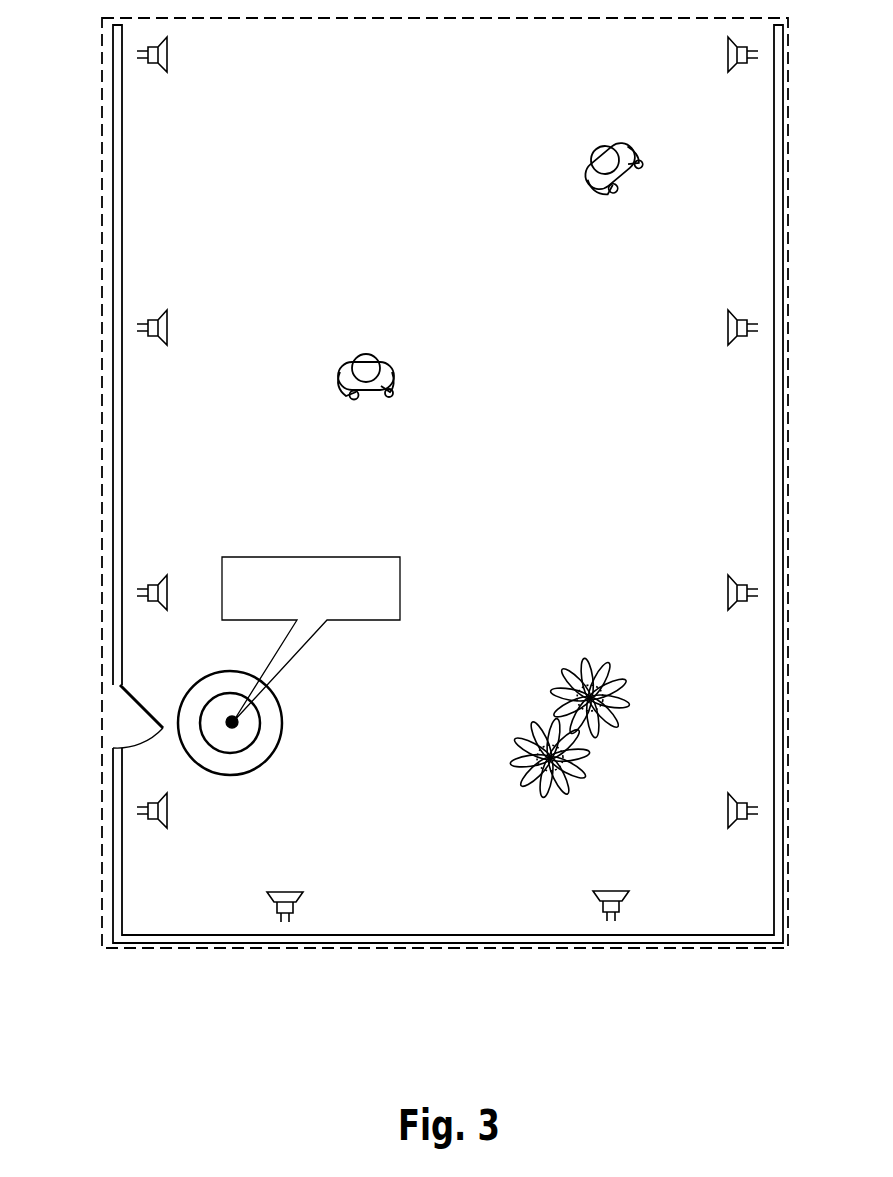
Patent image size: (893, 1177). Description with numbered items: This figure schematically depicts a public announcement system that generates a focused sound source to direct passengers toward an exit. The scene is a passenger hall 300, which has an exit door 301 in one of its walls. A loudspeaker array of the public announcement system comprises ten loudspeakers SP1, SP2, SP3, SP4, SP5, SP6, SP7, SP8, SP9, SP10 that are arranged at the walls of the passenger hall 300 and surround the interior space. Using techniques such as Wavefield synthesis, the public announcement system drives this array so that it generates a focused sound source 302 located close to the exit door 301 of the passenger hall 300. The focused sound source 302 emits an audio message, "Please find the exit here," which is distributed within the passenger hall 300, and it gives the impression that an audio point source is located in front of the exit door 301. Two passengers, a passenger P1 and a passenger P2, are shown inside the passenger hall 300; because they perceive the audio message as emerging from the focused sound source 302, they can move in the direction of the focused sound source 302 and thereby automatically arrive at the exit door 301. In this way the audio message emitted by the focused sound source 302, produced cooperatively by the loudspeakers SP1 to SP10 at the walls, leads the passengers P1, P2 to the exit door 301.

The passenger hall 300 is at (340, 948).
The exit door 301 is at (132, 717).
The focused sound source 302 is at (238, 727).
The loudspeaker SP1 is at (154, 68).
The loudspeaker SP2 is at (154, 341).
The loudspeaker SP3 is at (154, 606).
The loudspeaker SP4 is at (154, 824).
The loudspeaker SP5 is at (304, 907).
The loudspeaker SP6 is at (630, 906).
The loudspeaker SP7 is at (742, 824).
The loudspeaker SP8 is at (740, 606).
The loudspeaker SP9 is at (740, 341).
The loudspeaker SP10 is at (740, 68).
The passenger P1 is at (366, 358).
The passenger P2 is at (609, 158).